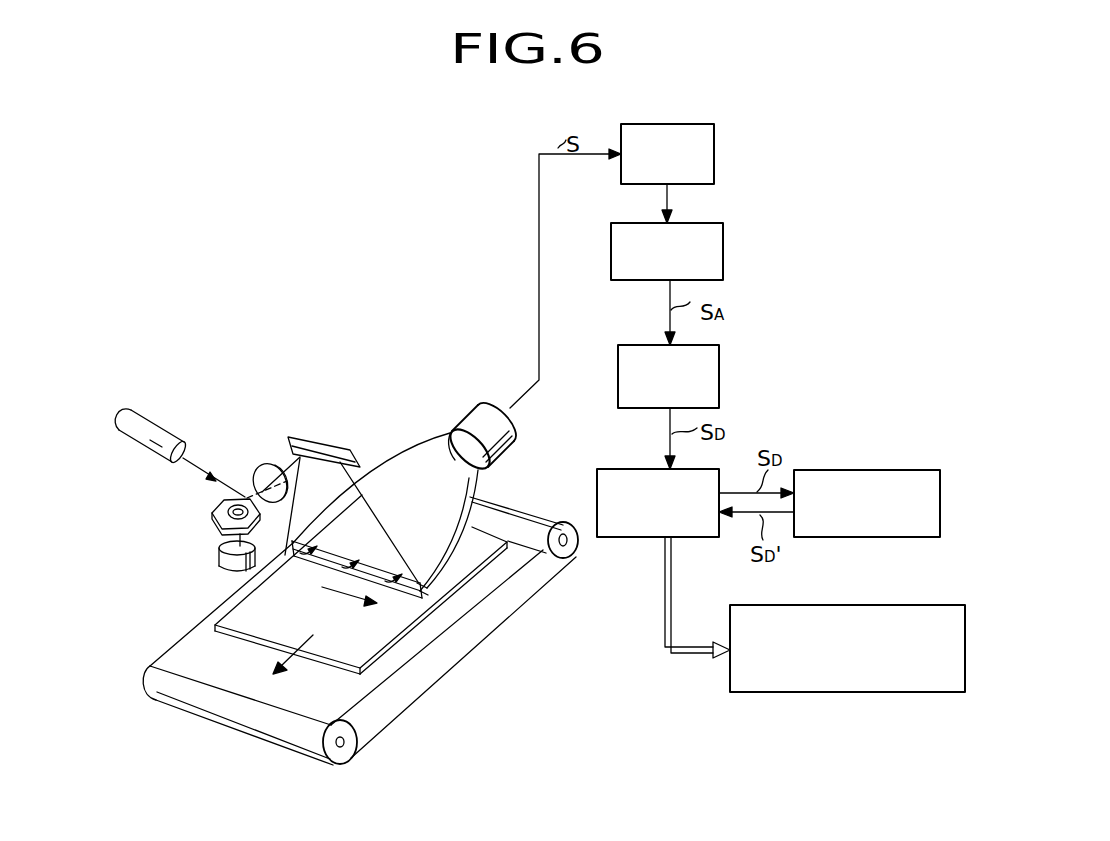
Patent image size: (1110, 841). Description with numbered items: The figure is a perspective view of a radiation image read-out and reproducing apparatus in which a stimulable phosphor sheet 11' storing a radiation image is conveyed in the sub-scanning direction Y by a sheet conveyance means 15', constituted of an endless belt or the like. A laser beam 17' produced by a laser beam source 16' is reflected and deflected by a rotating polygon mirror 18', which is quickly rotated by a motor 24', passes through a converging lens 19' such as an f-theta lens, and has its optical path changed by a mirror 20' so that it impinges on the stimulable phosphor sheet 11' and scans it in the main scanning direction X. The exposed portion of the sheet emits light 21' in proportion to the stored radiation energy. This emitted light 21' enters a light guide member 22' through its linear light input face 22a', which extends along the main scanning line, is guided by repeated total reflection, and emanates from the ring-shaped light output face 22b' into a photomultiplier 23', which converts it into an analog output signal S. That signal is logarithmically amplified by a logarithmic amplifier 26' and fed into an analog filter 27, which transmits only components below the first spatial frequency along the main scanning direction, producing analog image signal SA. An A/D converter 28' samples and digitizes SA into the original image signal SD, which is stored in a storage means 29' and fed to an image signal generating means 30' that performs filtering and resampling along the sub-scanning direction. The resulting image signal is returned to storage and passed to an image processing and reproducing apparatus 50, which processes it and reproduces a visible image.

The stimulable phosphor sheet 11' is at (361, 600).
The sheet conveyance means 15' is at (360, 631).
The laser beam source 16' is at (152, 421).
The laser beam 17' is at (241, 455).
The rotating polygon mirror 18' is at (213, 515).
The converging lens 19' is at (270, 456).
The mirror 20' is at (326, 431).
The emitted light 21' is at (350, 578).
The light guide member 22' is at (381, 498).
The light input face 22a' is at (478, 625).
The light output face 22b' is at (512, 458).
The photomultiplier 23' is at (478, 420).
The motor 24' is at (213, 550).
The logarithmic amplifier 26' is at (703, 154).
The analog filter 27 is at (723, 244).
The A/D converter 28' is at (701, 376).
The storage means 29' is at (658, 481).
The image signal generating means 30' is at (867, 474).
The image processing and reproducing apparatus 50 is at (837, 604).